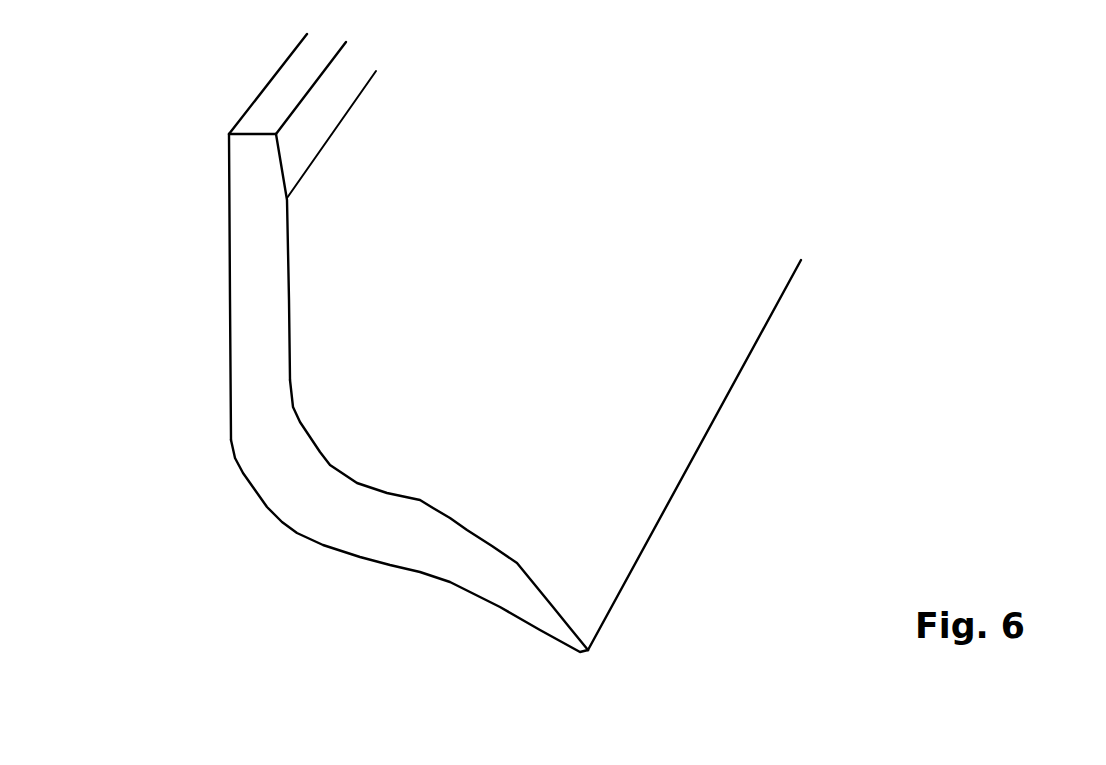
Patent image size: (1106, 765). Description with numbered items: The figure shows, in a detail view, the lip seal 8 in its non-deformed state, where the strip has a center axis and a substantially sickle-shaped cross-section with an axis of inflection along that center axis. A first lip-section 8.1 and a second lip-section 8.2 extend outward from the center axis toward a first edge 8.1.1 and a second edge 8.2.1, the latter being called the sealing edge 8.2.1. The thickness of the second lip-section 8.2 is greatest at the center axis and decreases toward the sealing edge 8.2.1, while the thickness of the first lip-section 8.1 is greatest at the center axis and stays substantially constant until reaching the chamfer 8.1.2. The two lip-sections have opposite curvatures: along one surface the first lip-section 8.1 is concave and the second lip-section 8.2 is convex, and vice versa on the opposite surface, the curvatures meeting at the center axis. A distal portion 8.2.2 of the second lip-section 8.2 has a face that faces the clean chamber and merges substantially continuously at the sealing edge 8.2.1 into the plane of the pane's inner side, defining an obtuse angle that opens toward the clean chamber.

The lip seal 8 is at (216, 511).
The first lip-section 8.1 is at (257, 280).
The first edge 8.1.1 is at (277, 89).
The chamfer 8.1.2 is at (330, 110).
The second lip-section 8.2 is at (405, 547).
The sealing edge 8.2.1 is at (690, 468).
The distal portion 8.2.2 is at (510, 617).